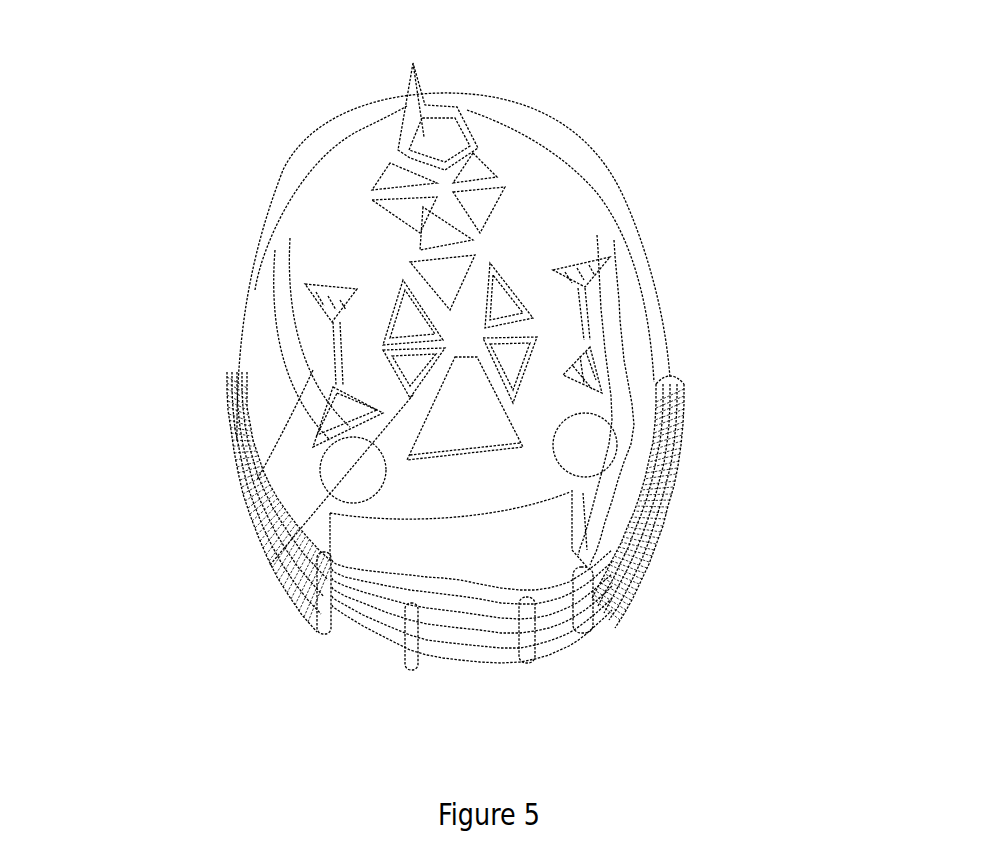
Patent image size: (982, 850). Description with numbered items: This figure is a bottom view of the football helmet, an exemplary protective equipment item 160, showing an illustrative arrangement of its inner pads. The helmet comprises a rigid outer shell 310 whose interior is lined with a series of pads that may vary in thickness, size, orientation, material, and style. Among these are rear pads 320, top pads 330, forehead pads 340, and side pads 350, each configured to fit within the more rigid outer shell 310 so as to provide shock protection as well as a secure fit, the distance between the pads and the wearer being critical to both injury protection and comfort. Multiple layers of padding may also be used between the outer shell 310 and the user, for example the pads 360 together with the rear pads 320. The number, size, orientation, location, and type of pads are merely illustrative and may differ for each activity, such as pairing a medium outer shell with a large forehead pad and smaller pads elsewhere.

The protective equipment item 160 is at (216, 170).
The rigid outer shell 310 is at (520, 480).
The rear pads 320 is at (477, 152).
The top pads 330 is at (450, 277).
The forehead pads 340 is at (447, 565).
The side pads 350 is at (335, 415).
The pads 360 is at (318, 160).